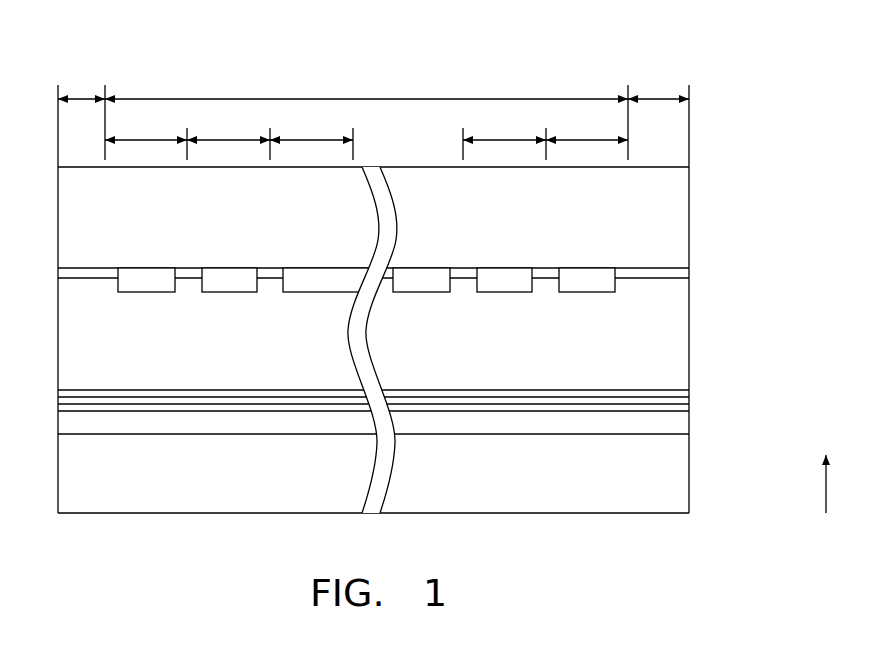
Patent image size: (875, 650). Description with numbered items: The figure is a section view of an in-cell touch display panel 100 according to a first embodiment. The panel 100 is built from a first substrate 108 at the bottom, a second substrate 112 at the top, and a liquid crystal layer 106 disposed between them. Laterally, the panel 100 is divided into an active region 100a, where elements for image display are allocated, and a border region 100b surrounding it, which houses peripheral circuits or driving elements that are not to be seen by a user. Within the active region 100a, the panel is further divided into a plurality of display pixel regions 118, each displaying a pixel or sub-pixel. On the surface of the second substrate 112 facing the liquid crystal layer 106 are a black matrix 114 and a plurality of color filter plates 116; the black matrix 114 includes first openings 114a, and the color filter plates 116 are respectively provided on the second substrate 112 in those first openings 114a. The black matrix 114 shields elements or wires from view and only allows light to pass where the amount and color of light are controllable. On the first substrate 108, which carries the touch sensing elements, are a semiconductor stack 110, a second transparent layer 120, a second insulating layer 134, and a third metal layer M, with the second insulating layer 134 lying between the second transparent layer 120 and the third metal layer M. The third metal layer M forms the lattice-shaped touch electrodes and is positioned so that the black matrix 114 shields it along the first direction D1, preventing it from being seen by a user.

The in-cell touch display panel 100 is at (748, 52).
The active region 100a is at (366, 87).
The border region 100b is at (373, 121).
The display pixel regions 118 is at (366, 137).
The second substrate 112 is at (542, 216).
The black matrix 114 is at (272, 277).
The first openings 114a is at (231, 281).
The color filter plates 116 is at (310, 285).
The liquid crystal layer 106 is at (545, 364).
The third metal layer M is at (689, 391).
The second insulating layer 134 is at (689, 399).
The second transparent layer 120 is at (680, 408).
The semiconductor stack 110 is at (679, 425).
The first substrate 108 is at (542, 482).
The first direction D1 is at (841, 484).